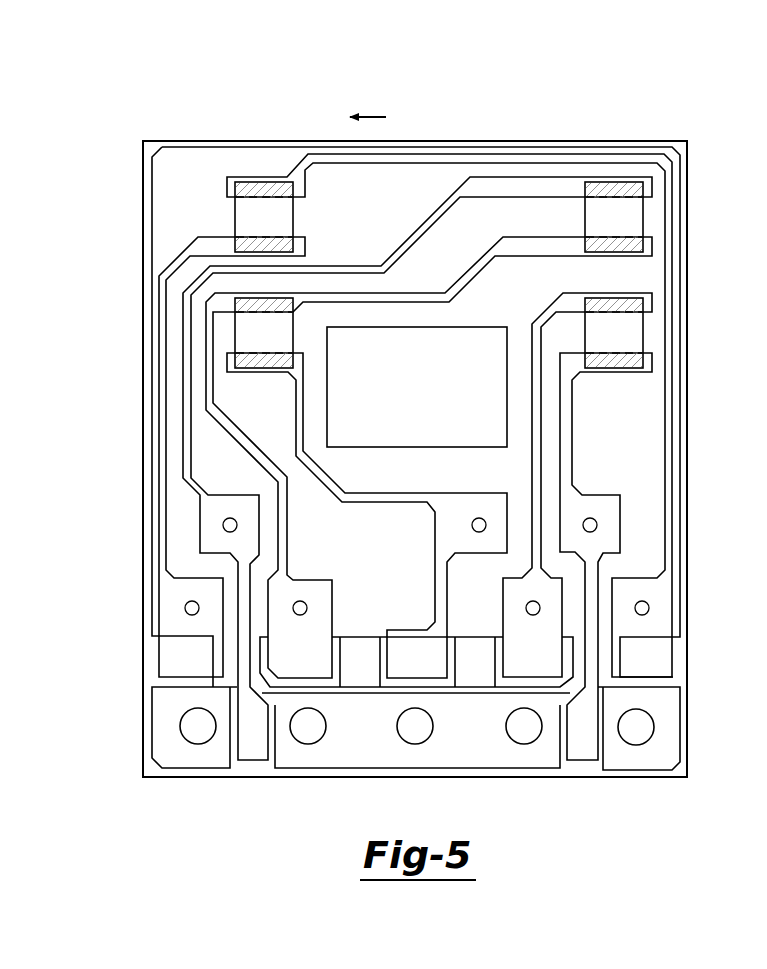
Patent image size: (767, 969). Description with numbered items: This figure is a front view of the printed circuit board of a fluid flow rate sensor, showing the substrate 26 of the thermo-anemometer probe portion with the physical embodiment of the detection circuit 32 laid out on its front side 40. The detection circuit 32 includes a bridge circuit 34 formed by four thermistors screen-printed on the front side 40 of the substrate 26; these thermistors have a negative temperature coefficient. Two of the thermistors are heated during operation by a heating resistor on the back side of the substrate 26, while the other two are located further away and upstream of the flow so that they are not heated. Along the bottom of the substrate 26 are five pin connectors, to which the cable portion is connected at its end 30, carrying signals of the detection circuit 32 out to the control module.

The substrate 26 is at (207, 88).
The end 30 is at (689, 732).
The detection circuit 32 is at (215, 460).
The bridge circuit 34 is at (519, 167).
The front side 40 is at (177, 204).